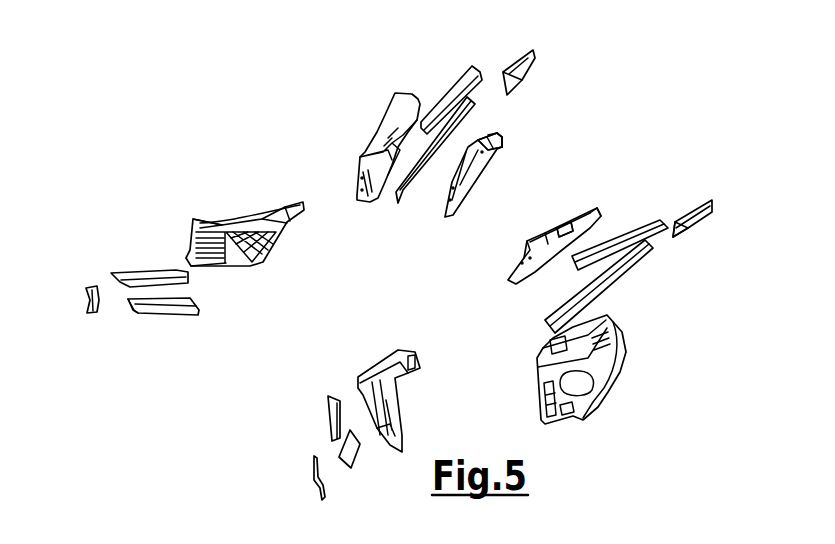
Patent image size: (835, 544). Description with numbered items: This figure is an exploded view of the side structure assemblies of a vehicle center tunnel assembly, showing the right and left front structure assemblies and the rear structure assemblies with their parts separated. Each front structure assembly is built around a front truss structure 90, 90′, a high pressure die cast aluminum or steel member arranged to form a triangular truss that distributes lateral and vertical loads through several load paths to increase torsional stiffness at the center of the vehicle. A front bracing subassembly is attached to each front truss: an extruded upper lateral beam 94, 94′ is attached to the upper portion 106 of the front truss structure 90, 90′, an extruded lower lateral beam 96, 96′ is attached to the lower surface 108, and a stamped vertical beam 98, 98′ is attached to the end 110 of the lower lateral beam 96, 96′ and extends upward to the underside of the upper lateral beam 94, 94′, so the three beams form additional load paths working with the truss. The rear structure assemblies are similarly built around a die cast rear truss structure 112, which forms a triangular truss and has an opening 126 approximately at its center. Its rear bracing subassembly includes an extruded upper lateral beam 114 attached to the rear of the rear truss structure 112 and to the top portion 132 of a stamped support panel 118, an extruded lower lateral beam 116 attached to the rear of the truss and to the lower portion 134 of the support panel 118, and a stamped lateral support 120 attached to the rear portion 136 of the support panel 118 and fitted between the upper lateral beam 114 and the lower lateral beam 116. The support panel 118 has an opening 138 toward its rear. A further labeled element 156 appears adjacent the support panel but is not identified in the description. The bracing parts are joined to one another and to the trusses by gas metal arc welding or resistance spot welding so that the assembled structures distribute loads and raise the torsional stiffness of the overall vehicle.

The front truss structure 90 is at (244, 222).
The front truss structure 90′ is at (375, 375).
The upper lateral beam 94 is at (137, 272).
The upper lateral beam 94′ is at (327, 405).
The lower lateral beam 96 is at (165, 305).
The lower lateral beam 96′ is at (352, 462).
The vertical beam 98 is at (82, 300).
The vertical beam 98′ is at (314, 482).
The upper portion 106 is at (207, 217).
The lower surface 108 is at (213, 264).
The end 110 is at (133, 302).
The rear truss structure 112 is at (403, 92).
The upper lateral beam 114 is at (468, 66).
The lower lateral beam 116 is at (420, 198).
The support panel 118 is at (512, 140).
The lateral support 120 is at (531, 52).
The opening 126 is at (572, 385).
The top portion 132 is at (472, 147).
The lower portion 134 is at (478, 187).
The rear portion 136 is at (598, 216).
The opening 138 is at (505, 137).
The attachment tab 156 is at (504, 141).